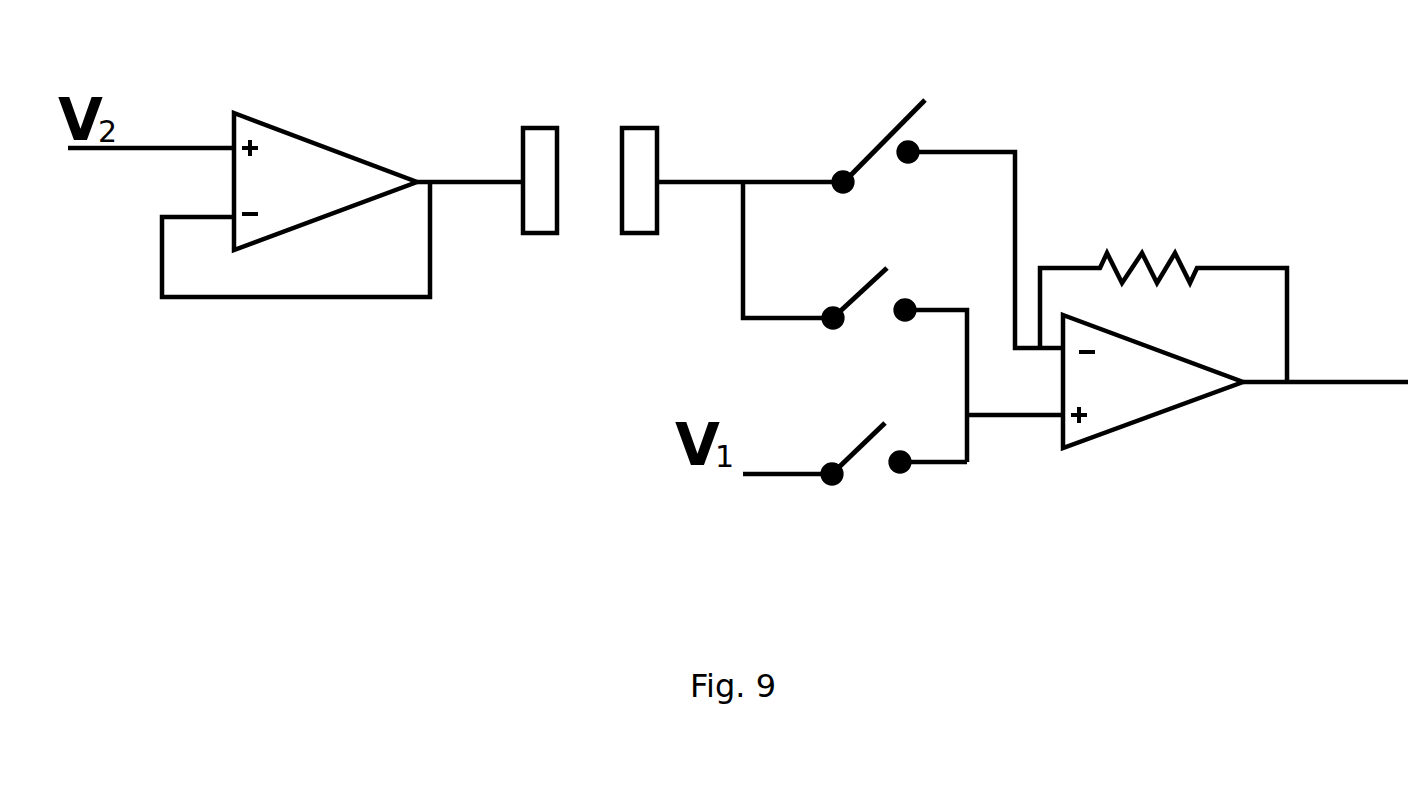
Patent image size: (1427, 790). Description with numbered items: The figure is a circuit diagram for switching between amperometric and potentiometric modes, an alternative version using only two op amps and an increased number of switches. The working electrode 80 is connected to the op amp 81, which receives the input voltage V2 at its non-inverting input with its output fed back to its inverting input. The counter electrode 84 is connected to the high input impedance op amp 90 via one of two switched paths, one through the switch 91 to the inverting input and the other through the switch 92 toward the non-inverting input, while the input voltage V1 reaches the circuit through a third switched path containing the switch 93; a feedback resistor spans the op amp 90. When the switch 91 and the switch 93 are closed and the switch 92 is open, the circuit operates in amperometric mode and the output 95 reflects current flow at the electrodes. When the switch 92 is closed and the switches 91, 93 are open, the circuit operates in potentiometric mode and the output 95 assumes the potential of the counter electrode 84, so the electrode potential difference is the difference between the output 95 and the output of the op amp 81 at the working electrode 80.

The working electrode 80 is at (540, 152).
The op amp 81 is at (304, 172).
The counter electrode 84 is at (641, 152).
The high input impedance op amp 90 is at (1137, 392).
The switch 91 is at (872, 142).
The switch 92 is at (857, 290).
The switch 93 is at (852, 450).
The output 95 is at (1382, 378).